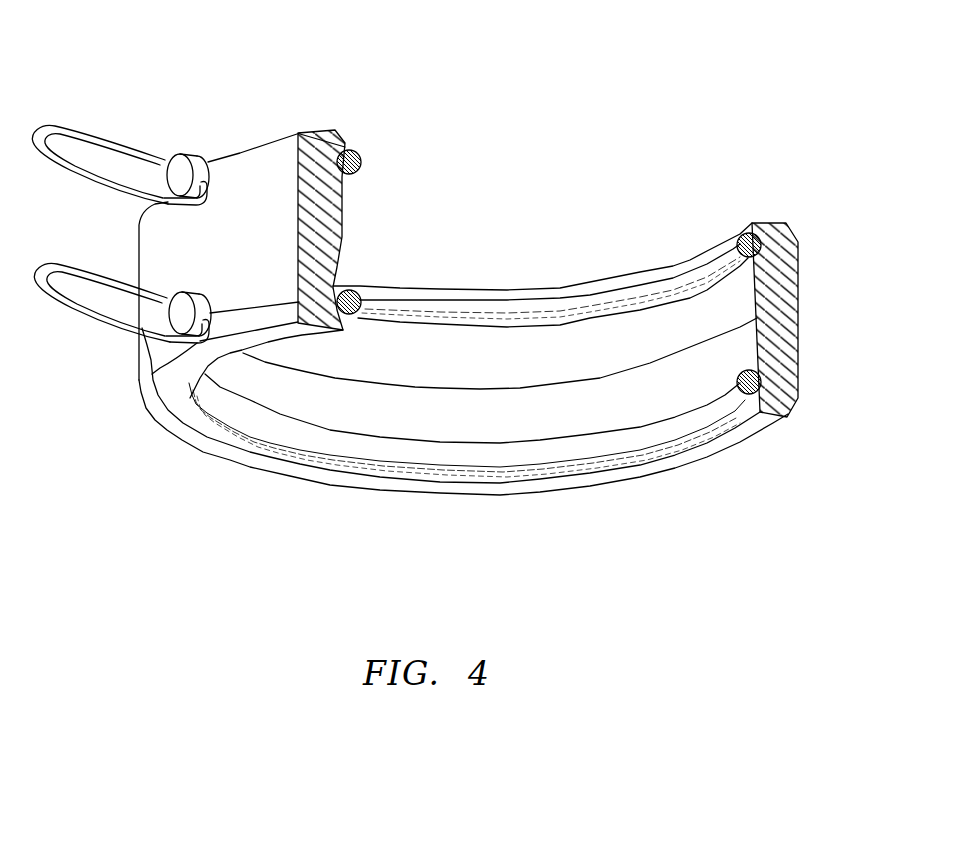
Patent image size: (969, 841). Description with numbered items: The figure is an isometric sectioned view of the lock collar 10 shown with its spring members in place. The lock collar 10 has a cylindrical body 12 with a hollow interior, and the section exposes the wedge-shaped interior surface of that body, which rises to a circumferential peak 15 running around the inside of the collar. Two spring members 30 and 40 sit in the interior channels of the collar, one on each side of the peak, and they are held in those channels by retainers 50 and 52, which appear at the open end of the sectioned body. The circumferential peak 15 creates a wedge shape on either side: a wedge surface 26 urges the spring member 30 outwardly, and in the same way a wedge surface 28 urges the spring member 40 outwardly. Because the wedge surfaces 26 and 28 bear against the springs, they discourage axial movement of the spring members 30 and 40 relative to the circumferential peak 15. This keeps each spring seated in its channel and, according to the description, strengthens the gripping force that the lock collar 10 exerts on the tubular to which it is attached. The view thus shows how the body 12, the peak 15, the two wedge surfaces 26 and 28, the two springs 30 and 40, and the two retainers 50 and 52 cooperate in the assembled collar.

The lock collar 10 is at (716, 41).
The cylindrical body 12 is at (278, 138).
The circumferential peak 15 is at (470, 388).
The wedge surface 26 is at (734, 354).
The wedge surface 28 is at (720, 301).
The spring member 30 is at (693, 423).
The spring member 40 is at (703, 273).
The retainer 50 is at (100, 322).
The retainer 52 is at (66, 128).